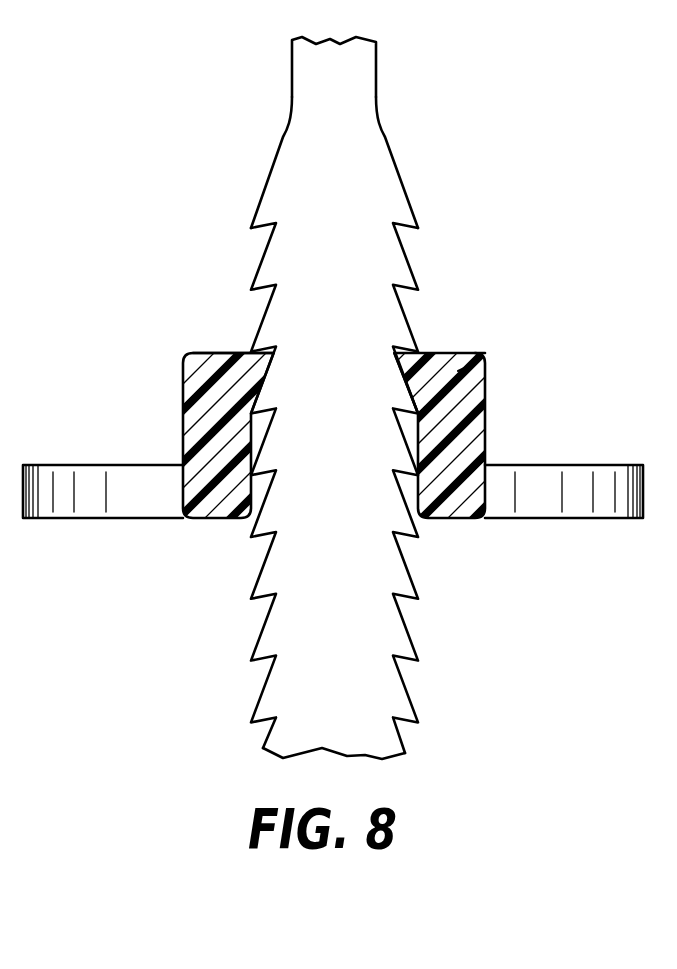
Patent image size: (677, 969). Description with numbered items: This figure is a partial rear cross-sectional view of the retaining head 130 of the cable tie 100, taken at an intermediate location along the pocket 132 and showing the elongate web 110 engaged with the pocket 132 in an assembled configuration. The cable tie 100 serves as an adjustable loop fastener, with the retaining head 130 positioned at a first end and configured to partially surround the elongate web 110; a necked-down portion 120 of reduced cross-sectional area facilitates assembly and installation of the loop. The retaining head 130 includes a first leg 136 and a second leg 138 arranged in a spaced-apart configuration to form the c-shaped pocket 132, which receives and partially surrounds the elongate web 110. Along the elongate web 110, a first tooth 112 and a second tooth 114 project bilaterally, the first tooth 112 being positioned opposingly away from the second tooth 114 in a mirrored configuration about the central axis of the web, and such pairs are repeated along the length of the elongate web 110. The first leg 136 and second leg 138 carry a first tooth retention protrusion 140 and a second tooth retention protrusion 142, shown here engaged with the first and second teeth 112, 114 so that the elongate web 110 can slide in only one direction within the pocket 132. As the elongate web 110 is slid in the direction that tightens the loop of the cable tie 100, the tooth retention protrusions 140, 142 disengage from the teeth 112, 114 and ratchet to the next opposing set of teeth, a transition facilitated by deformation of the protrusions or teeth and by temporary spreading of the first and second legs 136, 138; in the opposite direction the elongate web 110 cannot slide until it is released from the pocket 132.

The cable tie 100 is at (574, 169).
The elongate web 110 is at (340, 265).
The first tooth 112 is at (267, 308).
The second tooth 114 is at (403, 303).
The necked-down portion 120 is at (368, 60).
The retaining head 130 is at (485, 383).
The pocket 132 is at (605, 468).
The first leg 136 is at (485, 355).
The second leg 138 is at (207, 432).
The first tooth retention protrusion 140 is at (422, 353).
The second tooth retention protrusion 142 is at (243, 353).